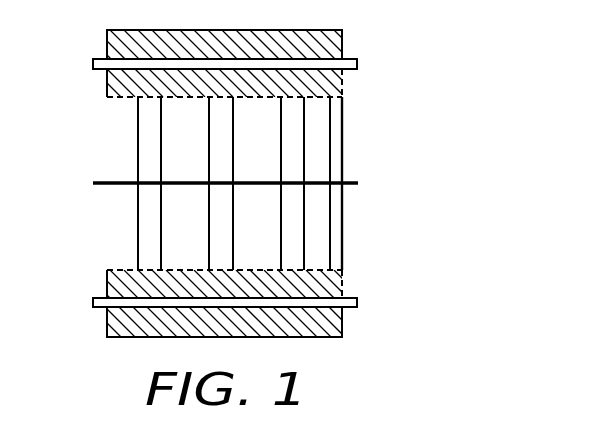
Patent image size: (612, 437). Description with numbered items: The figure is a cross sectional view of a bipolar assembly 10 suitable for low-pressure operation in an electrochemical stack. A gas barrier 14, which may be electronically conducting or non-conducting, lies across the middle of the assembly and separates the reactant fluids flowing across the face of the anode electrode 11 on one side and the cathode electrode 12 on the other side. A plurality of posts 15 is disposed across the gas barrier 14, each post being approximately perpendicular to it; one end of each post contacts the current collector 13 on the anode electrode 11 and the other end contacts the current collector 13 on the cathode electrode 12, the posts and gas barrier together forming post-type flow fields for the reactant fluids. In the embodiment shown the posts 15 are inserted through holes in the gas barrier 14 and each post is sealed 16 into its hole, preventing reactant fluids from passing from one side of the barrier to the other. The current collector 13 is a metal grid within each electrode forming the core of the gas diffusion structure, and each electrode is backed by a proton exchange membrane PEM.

The fuel cell assembly 10 is at (506, 123).
The anode electrode 11 is at (105, 82).
The cathode electrode 12 is at (107, 283).
The current collector 13 is at (123, 98).
The gas barrier 14 is at (358, 183).
The posts 15 is at (342, 137).
The seal 16 is at (137, 184).
The proton exchange membrane PEM is at (358, 63).